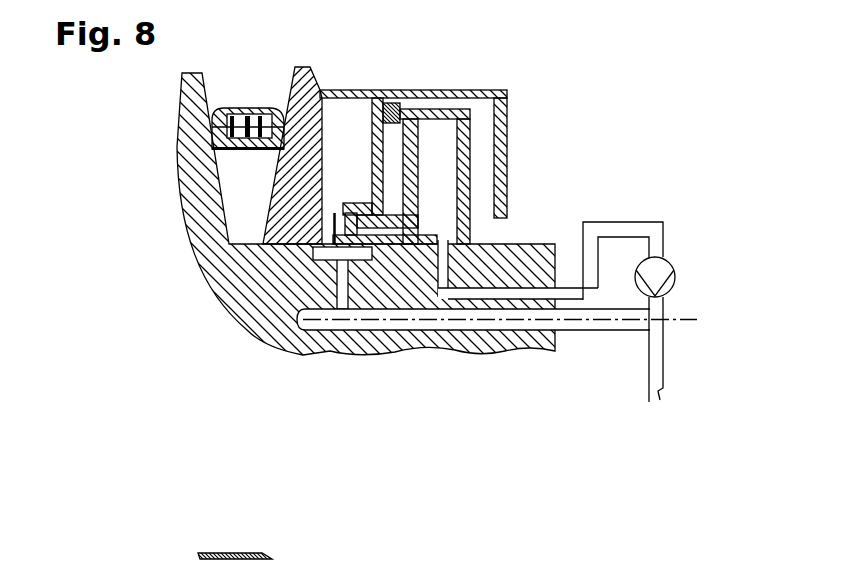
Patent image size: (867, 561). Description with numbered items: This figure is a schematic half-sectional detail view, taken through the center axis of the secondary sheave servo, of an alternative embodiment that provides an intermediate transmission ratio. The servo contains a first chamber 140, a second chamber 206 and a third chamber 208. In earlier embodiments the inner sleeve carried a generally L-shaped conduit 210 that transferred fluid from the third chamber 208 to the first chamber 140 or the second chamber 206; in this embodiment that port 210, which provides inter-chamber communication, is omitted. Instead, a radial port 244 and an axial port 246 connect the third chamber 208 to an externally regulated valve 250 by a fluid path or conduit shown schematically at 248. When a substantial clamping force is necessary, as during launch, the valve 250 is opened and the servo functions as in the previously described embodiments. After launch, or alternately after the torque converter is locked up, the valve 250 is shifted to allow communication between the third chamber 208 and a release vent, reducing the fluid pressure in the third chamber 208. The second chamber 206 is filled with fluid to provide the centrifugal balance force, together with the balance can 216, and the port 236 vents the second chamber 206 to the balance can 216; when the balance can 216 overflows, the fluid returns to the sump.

The first chamber 140 is at (337, 113).
The second chamber 206 is at (397, 112).
The third chamber 208 is at (440, 147).
The L-shaped conduit 210 is at (345, 214).
The balance can 216 is at (480, 120).
The port 236 is at (387, 107).
The radial port 244 is at (446, 278).
The axial port 246 is at (570, 294).
The fluid path or conduit 248 is at (612, 231).
The externally regulated valve 250 is at (677, 281).